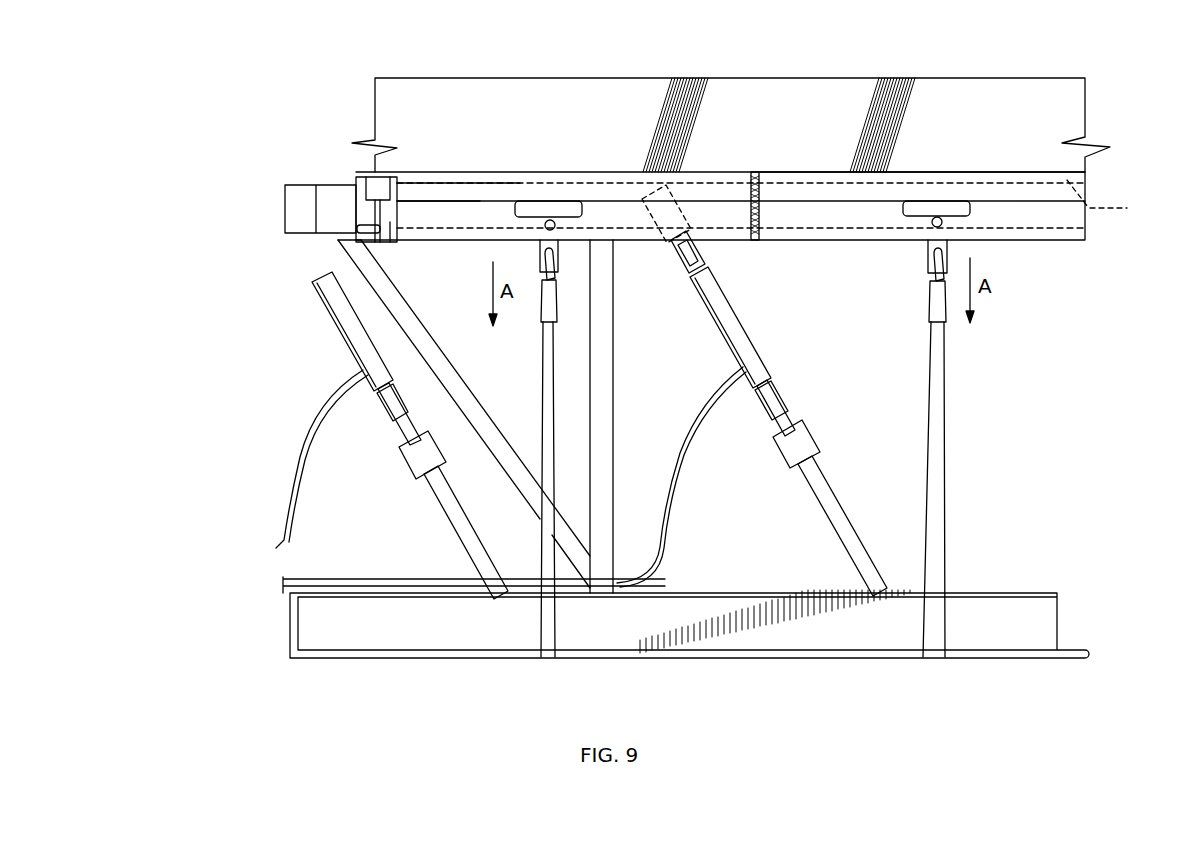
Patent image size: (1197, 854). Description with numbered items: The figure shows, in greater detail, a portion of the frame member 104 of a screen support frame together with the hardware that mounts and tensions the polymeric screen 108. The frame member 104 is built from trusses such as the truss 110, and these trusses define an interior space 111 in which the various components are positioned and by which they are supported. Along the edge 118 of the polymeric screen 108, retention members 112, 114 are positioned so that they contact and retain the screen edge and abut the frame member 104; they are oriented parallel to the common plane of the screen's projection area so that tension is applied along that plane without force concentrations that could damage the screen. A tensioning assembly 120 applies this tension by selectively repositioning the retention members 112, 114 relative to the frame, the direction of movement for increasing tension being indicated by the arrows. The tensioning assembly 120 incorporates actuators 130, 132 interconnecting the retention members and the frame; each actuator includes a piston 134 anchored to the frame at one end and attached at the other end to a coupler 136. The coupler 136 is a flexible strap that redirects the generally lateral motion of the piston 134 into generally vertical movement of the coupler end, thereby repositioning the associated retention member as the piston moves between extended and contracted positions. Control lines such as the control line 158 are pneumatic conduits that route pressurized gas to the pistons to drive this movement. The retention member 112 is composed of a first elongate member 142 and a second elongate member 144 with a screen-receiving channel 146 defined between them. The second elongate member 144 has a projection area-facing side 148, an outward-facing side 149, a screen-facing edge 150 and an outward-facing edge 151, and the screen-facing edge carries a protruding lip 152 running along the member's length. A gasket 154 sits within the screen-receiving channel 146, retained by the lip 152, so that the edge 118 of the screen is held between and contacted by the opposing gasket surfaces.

The frame member 104 is at (939, 672).
The polymeric screen 108 is at (419, 115).
The truss 110 is at (625, 435).
The interior space 111 is at (1000, 398).
The retention member 112 is at (549, 156).
The retention member 114 is at (929, 156).
The edge of the screen 118 is at (1117, 201).
The tensioning assembly 120 is at (364, 435).
The actuator 130 is at (318, 364).
The actuator 132 is at (704, 328).
The piston 134 is at (733, 320).
The coupler 136 is at (823, 483).
The first elongate member 142 is at (367, 210).
The second elongate member 144 is at (392, 225).
The screen-receiving channel 146 is at (356, 178).
The projection area-facing side 148 is at (352, 231).
The outward-facing side 149 is at (445, 212).
The screen-facing edge 150 is at (430, 172).
The outward-facing edge 151 is at (443, 242).
The protruding lip 152 is at (380, 178).
The gasket 154 is at (392, 177).
The control line 158 is at (685, 492).